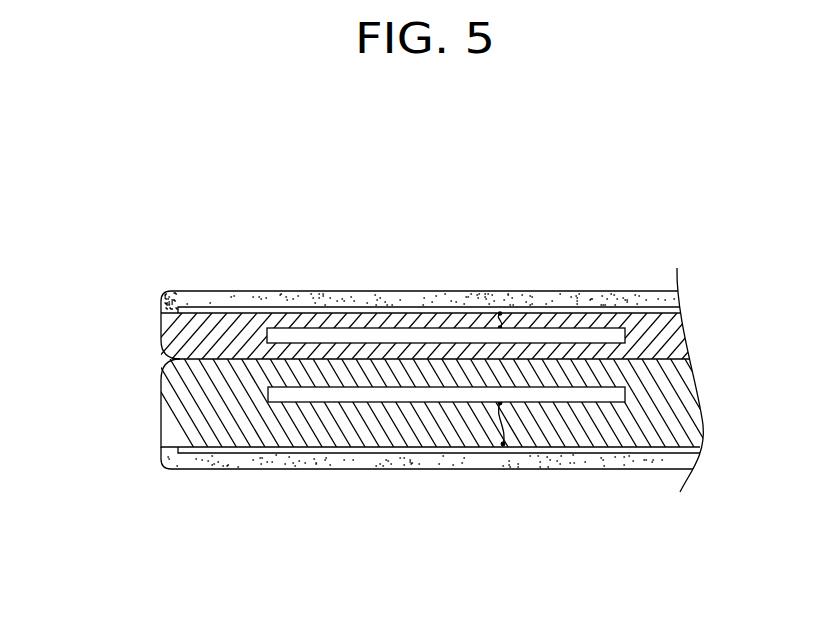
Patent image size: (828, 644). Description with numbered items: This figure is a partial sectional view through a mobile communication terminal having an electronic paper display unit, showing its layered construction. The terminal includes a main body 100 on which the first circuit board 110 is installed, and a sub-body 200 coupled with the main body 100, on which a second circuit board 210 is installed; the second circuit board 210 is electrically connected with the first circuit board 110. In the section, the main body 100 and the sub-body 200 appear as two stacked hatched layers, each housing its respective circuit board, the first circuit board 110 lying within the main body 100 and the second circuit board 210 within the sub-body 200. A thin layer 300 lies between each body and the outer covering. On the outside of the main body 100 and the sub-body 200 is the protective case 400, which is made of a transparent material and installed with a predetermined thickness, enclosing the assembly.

The main body 100 is at (389, 267).
The first circuit board 110 is at (433, 335).
The sub-body 200 is at (389, 473).
The second circuit board 210 is at (430, 397).
The thin film layer 300 is at (267, 310).
The protective case 400 is at (342, 302).